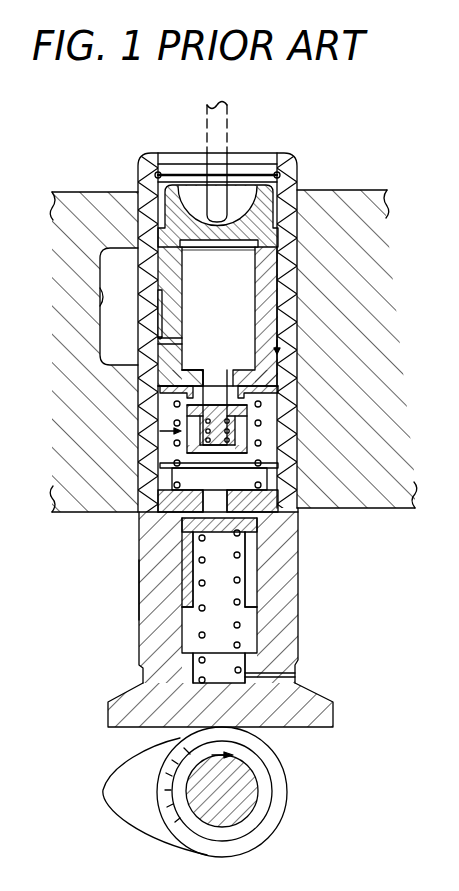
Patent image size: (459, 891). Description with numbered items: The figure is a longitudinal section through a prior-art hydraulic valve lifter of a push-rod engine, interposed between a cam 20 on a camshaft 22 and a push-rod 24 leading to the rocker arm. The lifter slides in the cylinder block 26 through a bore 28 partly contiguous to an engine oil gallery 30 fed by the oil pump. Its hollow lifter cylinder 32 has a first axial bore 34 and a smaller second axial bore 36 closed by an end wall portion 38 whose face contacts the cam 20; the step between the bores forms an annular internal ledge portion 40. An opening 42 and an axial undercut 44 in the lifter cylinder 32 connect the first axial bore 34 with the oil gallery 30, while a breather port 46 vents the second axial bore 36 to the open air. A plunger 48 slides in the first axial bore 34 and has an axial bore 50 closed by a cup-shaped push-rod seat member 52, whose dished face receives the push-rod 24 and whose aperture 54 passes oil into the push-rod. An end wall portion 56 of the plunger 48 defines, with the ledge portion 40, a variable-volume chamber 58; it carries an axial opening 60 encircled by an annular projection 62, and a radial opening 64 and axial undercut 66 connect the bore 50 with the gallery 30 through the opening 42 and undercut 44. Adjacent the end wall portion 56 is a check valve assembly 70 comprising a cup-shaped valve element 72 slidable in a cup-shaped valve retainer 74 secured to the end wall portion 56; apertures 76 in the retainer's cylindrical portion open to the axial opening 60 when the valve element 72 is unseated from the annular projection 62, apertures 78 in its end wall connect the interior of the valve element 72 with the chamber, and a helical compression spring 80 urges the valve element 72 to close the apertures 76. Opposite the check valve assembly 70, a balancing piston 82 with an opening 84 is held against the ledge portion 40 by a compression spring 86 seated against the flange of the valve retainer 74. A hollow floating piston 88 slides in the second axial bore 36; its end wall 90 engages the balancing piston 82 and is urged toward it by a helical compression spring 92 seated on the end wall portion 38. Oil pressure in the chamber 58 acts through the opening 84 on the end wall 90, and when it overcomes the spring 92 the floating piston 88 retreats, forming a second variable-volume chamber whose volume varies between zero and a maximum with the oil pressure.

The cam 20 is at (118, 780).
The camshaft 22 is at (257, 812).
The push-rod 24 is at (205, 127).
The cylinder block 26 is at (73, 186).
The bore 28 is at (146, 192).
The engine oil gallery 30 is at (99, 289).
The lifter cylinder 32 is at (296, 154).
The first axial bore 34 is at (278, 262).
The second axial bore 36 is at (250, 620).
The end wall portion 38 is at (326, 708).
The annular internal ledge portion 40 is at (145, 516).
The opening 42 is at (146, 342).
The axial undercut 44 is at (146, 358).
The breather port 46 is at (295, 676).
The plunger 48 is at (278, 303).
The axial bore 50 is at (233, 317).
The push-rod seat member 52 is at (268, 212).
The aperture 54 is at (220, 241).
The end wall portion 56 is at (280, 352).
The variable-volume chamber 58 is at (247, 421).
The axial opening 60 is at (228, 380).
The annular projection 62 is at (172, 392).
The radial opening 64 is at (182, 346).
The axial undercut 66 is at (147, 298).
The check valve assembly 70 is at (158, 431).
The valve element 72 is at (188, 408).
The valve retainer 74 is at (190, 449).
The apertures 76 is at (266, 395).
The apertures 78 is at (270, 464).
The helical compression spring 80 is at (262, 440).
The balancing piston 82 is at (286, 506).
The opening 84 is at (236, 512).
The compression spring 86 is at (158, 460).
The floating piston 88 is at (166, 583).
The end wall 90 is at (212, 535).
The helical compression spring 92 is at (199, 634).